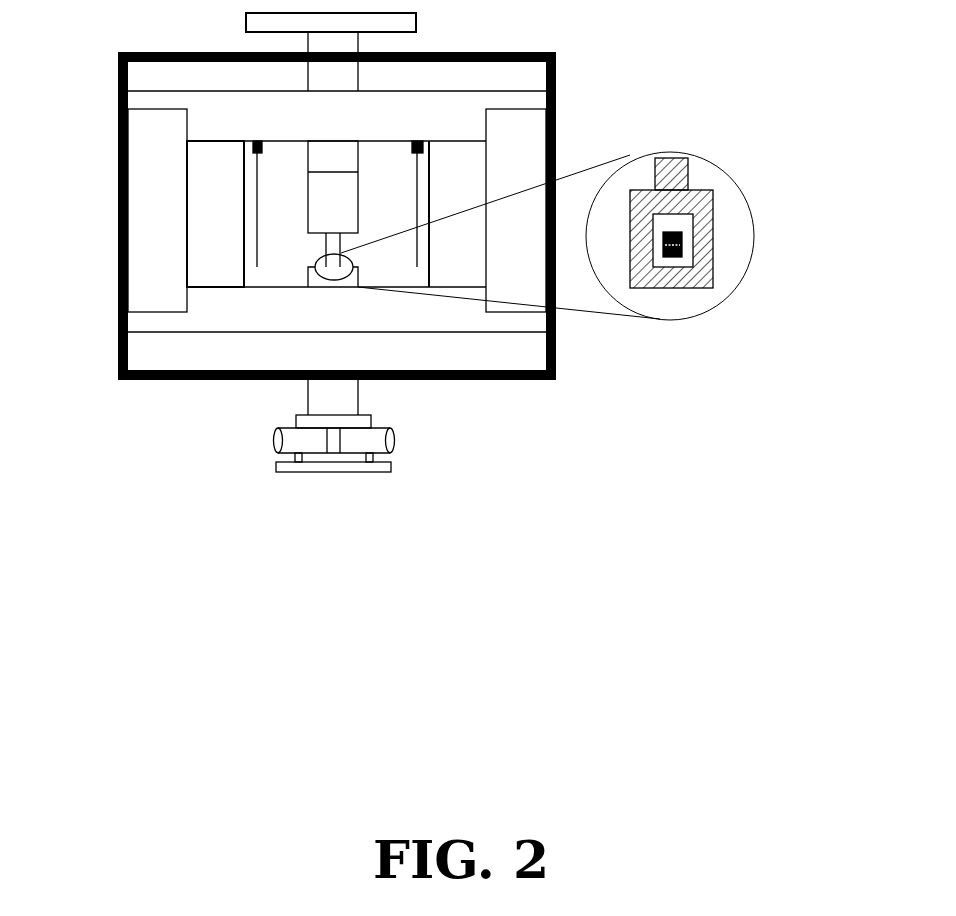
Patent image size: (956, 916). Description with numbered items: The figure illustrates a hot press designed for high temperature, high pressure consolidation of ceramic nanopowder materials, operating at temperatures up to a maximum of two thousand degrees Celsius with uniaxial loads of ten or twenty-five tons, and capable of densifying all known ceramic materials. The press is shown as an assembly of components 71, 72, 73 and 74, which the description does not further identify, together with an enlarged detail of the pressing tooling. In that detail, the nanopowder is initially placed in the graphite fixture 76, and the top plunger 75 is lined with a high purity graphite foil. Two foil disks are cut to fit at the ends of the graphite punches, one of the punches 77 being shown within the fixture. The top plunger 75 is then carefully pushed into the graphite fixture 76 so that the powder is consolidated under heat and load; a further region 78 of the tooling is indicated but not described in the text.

The top cover plate 71 is at (246, 21).
The housing inner wall 72 is at (221, 181).
The suspension rod 73 is at (257, 252).
The base drive cylinder 74 is at (273, 435).
The top plunger 75 is at (673, 158).
The graphite fixture 76 is at (713, 210).
The punch 77 is at (682, 251).
The sensor cavity 78 is at (658, 261).